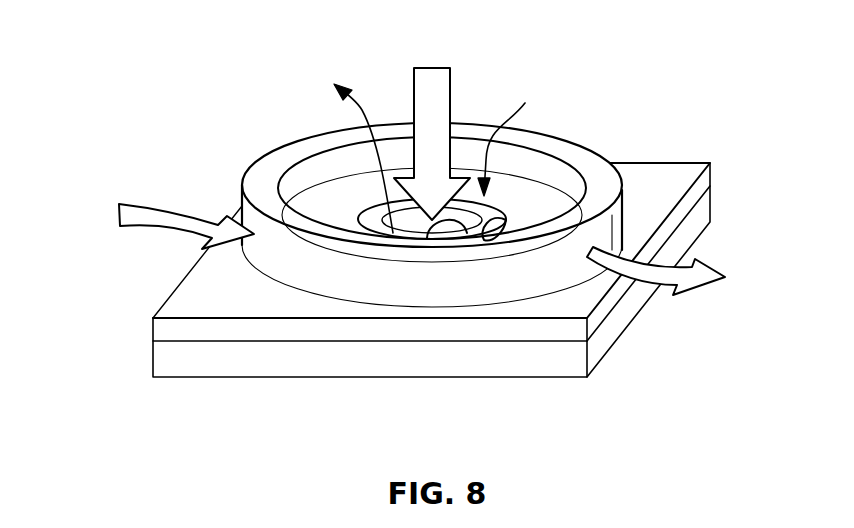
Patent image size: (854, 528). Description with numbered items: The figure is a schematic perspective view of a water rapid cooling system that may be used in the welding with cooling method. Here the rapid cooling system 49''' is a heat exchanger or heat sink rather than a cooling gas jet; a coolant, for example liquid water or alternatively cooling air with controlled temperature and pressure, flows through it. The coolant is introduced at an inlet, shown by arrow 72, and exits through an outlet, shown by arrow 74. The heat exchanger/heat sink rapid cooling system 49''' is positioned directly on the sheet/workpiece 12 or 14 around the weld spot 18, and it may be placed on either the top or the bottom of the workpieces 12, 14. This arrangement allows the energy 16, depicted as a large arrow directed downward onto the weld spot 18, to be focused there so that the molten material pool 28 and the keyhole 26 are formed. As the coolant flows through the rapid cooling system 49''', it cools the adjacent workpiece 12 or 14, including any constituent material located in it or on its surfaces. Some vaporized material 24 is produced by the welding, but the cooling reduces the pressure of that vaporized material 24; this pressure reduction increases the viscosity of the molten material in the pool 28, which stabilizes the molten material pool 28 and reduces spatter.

The sheet/workpiece 12 is at (170, 330).
The sheet/workpiece 14 is at (228, 362).
The energy 16 is at (450, 87).
The weld spot 18 is at (509, 139).
The vaporized material 24 is at (366, 110).
The keyhole 26 is at (467, 233).
The molten material pool 28 is at (507, 220).
The rapid cooling system 49''' is at (453, 184).
The inlet arrow 72 is at (174, 218).
The outlet arrow 74 is at (673, 295).